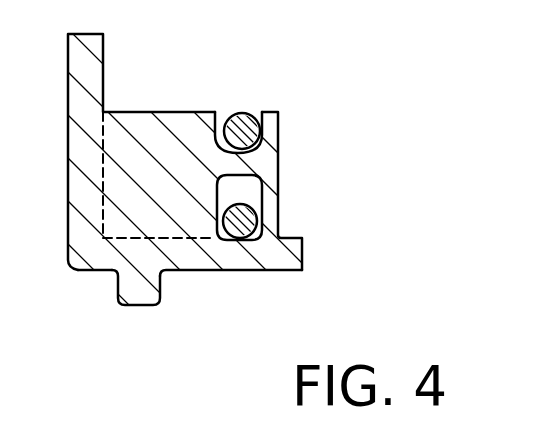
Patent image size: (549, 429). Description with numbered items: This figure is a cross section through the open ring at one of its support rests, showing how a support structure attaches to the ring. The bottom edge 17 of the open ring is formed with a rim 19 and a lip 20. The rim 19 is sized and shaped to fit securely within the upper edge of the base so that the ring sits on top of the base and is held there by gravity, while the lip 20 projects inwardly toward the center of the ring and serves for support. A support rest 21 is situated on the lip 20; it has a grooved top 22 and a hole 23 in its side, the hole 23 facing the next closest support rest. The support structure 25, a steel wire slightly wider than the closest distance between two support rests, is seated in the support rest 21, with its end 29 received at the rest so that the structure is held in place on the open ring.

The bottom edge 17 is at (80, 271).
The rim 19 is at (138, 297).
The lip 20 is at (205, 270).
The support rest 21 is at (150, 112).
The grooved top 22 is at (258, 112).
The hole 23 is at (238, 190).
The support structure 25 is at (263, 135).
The end 29 is at (250, 227).